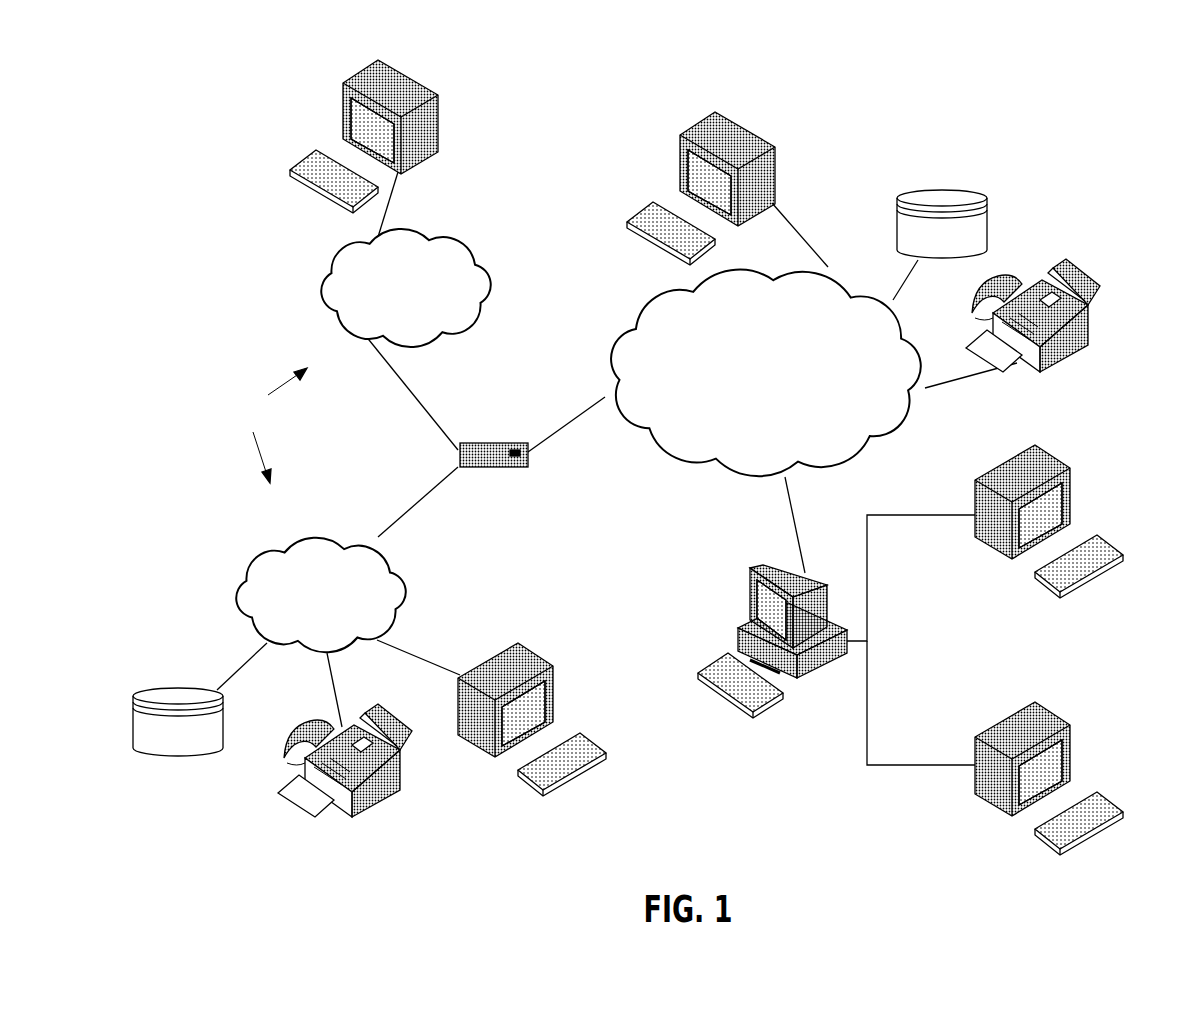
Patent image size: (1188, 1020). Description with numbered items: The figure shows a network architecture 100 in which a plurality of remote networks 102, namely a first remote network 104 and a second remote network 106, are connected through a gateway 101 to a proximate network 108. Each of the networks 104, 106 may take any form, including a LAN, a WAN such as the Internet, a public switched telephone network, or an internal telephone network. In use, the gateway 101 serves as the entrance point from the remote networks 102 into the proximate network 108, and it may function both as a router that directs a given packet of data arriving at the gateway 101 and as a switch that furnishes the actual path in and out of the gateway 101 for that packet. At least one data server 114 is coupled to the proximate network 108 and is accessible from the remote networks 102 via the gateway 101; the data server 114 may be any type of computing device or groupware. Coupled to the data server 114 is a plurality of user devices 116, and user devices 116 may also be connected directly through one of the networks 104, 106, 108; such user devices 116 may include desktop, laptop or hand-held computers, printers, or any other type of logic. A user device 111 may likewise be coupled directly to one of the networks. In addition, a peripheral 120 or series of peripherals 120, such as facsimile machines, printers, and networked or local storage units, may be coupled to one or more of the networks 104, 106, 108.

The architecture 100 is at (653, 29).
The gateway 101 is at (495, 443).
The remote networks 102 is at (268, 425).
The first remote network 104 is at (240, 566).
The second remote network 106 is at (494, 293).
The proximate network 108 is at (893, 434).
The user device 111 is at (772, 183).
The data server 114 is at (748, 595).
The user devices 116 is at (437, 126).
The peripheral 120 is at (942, 190).